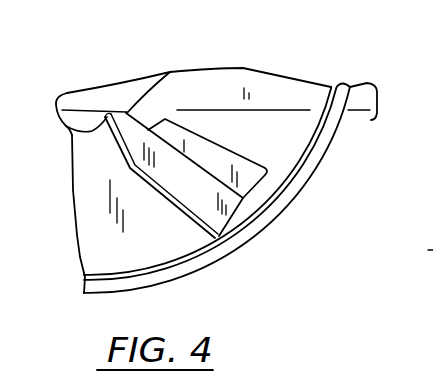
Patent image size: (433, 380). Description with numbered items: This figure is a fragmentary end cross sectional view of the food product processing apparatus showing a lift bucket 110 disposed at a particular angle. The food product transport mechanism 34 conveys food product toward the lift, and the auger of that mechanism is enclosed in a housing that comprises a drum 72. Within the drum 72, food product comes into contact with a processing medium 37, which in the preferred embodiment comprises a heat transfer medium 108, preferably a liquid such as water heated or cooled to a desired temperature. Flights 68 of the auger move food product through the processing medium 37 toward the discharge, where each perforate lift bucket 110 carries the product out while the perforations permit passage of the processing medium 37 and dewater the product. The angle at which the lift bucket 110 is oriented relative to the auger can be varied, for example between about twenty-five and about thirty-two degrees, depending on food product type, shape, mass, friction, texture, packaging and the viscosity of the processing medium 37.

The food product transport mechanism 34 is at (78, 256).
The processing medium 37 is at (280, 108).
The flights 68 is at (110, 214).
The drum 72 is at (221, 259).
The heat transfer medium 108 is at (77, 118).
The lift bucket 110 is at (128, 127).